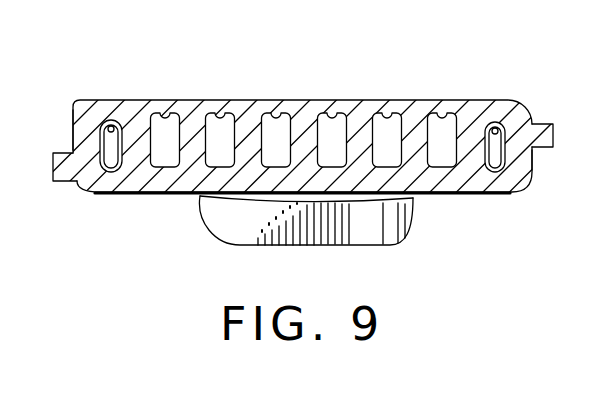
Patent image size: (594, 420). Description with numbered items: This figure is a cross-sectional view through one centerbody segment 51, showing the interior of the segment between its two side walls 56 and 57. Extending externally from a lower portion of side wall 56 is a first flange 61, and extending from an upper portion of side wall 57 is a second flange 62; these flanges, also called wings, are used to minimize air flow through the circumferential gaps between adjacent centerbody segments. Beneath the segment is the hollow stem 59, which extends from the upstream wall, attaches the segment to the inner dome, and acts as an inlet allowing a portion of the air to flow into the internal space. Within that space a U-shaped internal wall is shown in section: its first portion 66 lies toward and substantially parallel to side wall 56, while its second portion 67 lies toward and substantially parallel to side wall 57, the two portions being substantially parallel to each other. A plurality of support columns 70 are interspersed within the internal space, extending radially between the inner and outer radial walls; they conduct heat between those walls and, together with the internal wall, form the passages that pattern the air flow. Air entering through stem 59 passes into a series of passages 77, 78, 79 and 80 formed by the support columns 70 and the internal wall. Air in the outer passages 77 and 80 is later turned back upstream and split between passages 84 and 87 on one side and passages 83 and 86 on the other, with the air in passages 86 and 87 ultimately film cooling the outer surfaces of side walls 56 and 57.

The centerbody segment 51 is at (544, 234).
The side wall 56 is at (73, 144).
The side wall 57 is at (533, 166).
The stem 59 is at (243, 228).
The first flange 61 is at (62, 182).
The second flange 62 is at (549, 123).
The first portion of U-shaped internal wall 66 is at (192, 143).
The second portion of U-shaped internal wall 67 is at (415, 123).
The support columns 70 is at (304, 130).
The passage 77 is at (219, 113).
The passage 78 is at (272, 112).
The passage 79 is at (345, 113).
The passage 80 is at (393, 113).
The passage 83 is at (166, 113).
The passage 84 is at (431, 113).
The passage 86 is at (119, 119).
The passage 87 is at (492, 121).